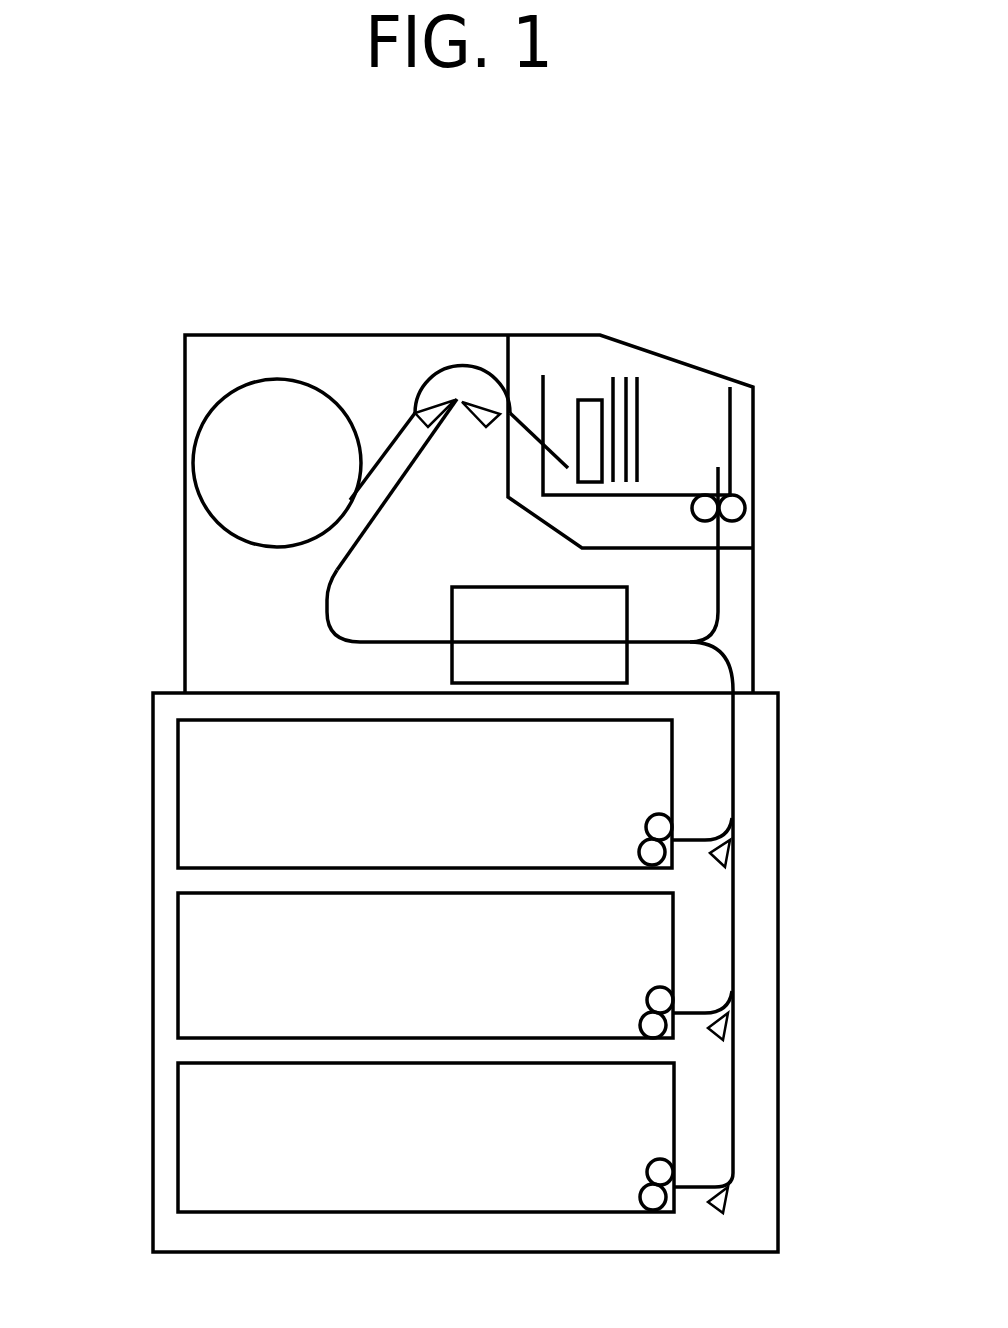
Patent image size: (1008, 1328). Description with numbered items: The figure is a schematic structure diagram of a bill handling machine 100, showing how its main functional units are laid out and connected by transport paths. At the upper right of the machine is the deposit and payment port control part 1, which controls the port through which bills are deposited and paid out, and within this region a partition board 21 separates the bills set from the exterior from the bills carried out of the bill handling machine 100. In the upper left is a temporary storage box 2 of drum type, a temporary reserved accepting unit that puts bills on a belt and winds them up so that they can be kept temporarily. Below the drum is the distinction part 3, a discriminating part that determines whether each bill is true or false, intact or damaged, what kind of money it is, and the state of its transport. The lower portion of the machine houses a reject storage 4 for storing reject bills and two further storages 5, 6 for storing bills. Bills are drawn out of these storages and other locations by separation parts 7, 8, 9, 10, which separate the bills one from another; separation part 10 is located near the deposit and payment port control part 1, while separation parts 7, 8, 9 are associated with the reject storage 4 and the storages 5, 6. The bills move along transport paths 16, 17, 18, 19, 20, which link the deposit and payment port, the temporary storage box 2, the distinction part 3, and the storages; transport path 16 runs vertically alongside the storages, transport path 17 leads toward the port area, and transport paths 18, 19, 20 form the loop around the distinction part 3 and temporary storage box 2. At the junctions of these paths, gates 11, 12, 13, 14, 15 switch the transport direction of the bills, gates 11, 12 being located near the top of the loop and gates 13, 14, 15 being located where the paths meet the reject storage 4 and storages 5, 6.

The bill handling machine 100 is at (118, 389).
The deposit and payment port control part 1 is at (698, 392).
The temporary storage box 2 is at (240, 383).
The distinction part 3 is at (612, 610).
The reject storage 4 is at (177, 770).
The storage 5 is at (177, 945).
The storage 6 is at (177, 1107).
The separation part 7 is at (672, 807).
The separation part 8 is at (672, 987).
The separation part 9 is at (672, 1160).
The separation part 10 is at (744, 496).
The gate 11 is at (482, 403).
The gate 12 is at (440, 398).
The gate 13 is at (730, 855).
The gate 14 is at (728, 1030).
The gate 15 is at (728, 1197).
The transport path 16 is at (715, 910).
The transport path 17 is at (722, 552).
The transport path 18 is at (514, 414).
The transport path 19 is at (390, 450).
The transport path 20 is at (327, 608).
The partition board 21 is at (590, 397).